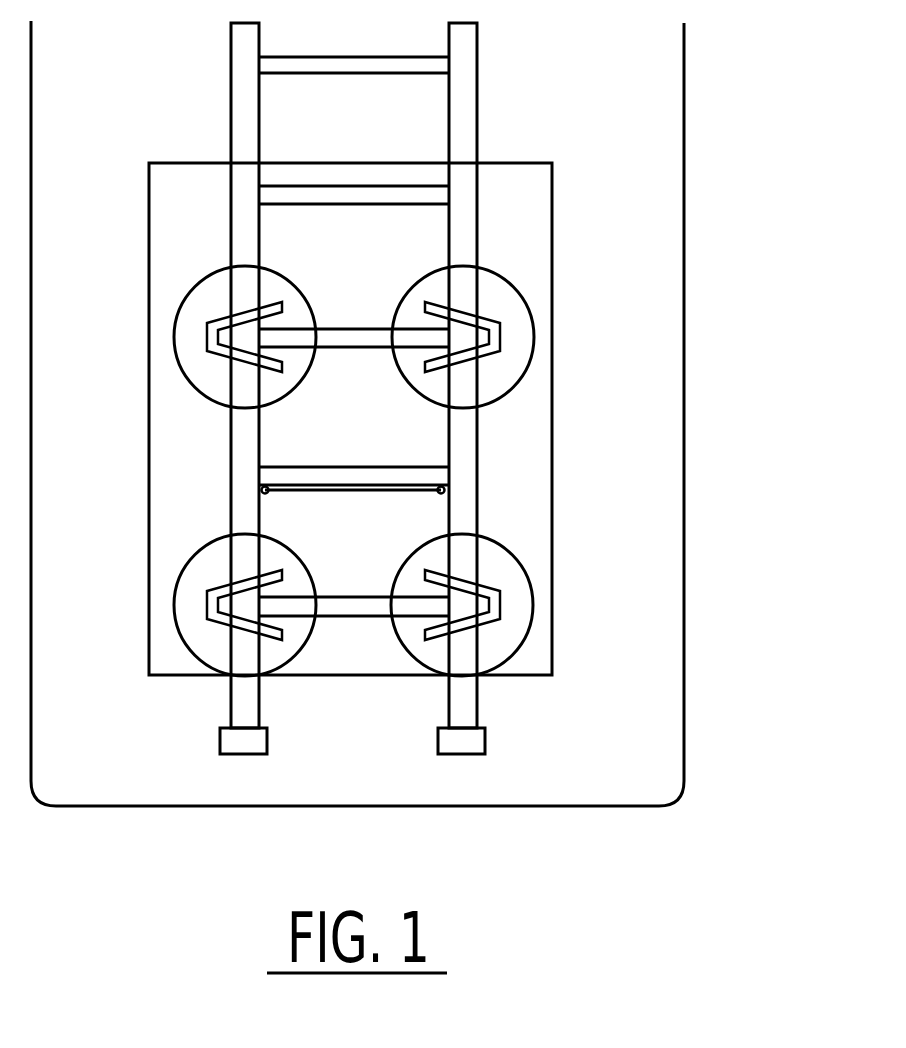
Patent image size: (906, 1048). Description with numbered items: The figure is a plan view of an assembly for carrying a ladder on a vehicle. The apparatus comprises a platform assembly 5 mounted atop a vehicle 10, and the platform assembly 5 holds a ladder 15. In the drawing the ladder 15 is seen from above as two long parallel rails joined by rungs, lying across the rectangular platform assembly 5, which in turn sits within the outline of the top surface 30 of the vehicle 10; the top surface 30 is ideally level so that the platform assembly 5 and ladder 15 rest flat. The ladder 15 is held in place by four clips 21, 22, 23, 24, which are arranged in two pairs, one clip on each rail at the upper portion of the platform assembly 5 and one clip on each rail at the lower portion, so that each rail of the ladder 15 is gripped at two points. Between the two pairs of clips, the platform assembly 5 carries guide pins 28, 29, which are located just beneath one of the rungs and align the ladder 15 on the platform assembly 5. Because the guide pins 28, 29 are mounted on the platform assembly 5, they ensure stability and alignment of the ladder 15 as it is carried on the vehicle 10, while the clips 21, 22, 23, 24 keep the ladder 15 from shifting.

The platform assembly 5 is at (553, 513).
The vehicle 10 is at (424, 413).
The ladder 15 is at (477, 113).
The clip 21 is at (502, 333).
The clip 22 is at (500, 598).
The clip 23 is at (207, 601).
The clip 24 is at (207, 333).
The guide pin 28 is at (437, 490).
The guide pin 29 is at (269, 490).
The top surface 30 is at (618, 162).